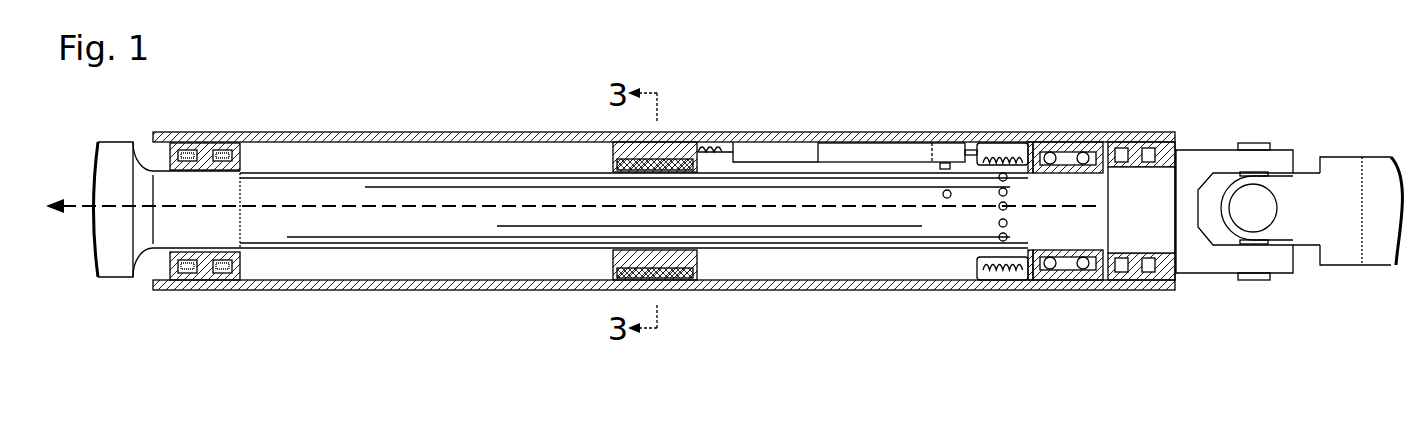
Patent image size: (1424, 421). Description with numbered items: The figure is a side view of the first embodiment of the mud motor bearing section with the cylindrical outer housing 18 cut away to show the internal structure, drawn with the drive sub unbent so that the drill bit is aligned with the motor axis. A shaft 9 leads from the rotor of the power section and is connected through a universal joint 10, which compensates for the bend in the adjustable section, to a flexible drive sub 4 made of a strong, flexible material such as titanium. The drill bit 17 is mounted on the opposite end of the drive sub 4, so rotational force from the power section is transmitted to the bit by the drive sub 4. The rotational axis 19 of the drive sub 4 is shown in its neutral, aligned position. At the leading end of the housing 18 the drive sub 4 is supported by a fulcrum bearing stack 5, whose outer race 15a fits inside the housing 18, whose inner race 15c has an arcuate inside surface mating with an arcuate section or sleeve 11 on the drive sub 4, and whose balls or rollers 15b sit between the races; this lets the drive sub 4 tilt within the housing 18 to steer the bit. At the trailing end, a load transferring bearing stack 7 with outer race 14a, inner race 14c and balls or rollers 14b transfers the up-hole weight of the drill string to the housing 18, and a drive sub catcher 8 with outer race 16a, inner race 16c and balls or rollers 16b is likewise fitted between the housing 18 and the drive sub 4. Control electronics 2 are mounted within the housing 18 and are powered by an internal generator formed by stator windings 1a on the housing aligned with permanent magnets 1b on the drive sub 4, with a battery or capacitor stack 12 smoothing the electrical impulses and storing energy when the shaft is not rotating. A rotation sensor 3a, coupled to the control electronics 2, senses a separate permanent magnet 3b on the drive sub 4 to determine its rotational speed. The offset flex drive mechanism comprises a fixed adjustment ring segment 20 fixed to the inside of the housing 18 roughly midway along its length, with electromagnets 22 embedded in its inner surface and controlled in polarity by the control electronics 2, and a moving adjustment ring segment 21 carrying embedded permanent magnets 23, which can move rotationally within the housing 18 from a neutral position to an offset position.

The stator windings 1a is at (1003, 150).
The permanent magnets 1b is at (1000, 208).
The control electronics 2 is at (858, 148).
The rotation sensor 3a is at (945, 152).
The permanent magnet 3b is at (944, 190).
The flexible drive sub 4 is at (398, 197).
The fulcrum bearing stack 5 is at (210, 280).
The load transferring bearing stack 7 is at (1033, 142).
The drive sub catcher 8 is at (1113, 278).
The shaft 9 is at (1380, 163).
The universal joint 10 is at (1305, 160).
The arcuate section or sleeve 11 is at (166, 243).
The battery or capacitor stack 12 is at (757, 150).
The outer race 14a is at (1098, 145).
The balls or rollers 14b is at (1085, 152).
The inner race 14c is at (1070, 160).
The outer race 15a is at (190, 150).
The balls or rollers 15b is at (220, 152).
The inner race 15c is at (242, 162).
The outer race 16a is at (1123, 272).
The balls or rollers 16b is at (1150, 262).
The inner race 16c is at (1162, 262).
The drill bit 17 is at (112, 157).
The cylindrical outer housing 18 is at (385, 133).
The rotational axis 19 is at (92, 200).
The fixed adjustment ring segment 20 is at (665, 150).
The moving adjustment ring segment 21 is at (687, 258).
The electromagnets 22 is at (680, 163).
The permanent magnets 23 is at (660, 270).